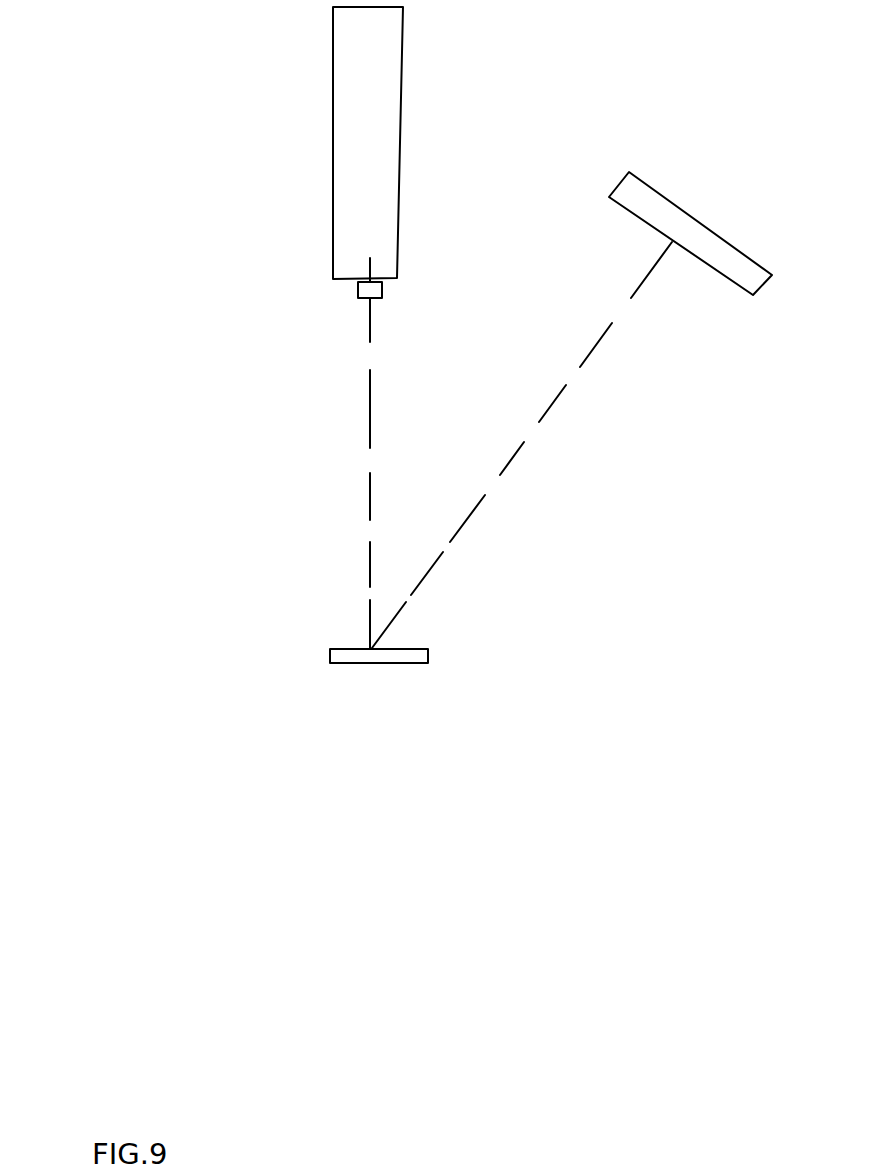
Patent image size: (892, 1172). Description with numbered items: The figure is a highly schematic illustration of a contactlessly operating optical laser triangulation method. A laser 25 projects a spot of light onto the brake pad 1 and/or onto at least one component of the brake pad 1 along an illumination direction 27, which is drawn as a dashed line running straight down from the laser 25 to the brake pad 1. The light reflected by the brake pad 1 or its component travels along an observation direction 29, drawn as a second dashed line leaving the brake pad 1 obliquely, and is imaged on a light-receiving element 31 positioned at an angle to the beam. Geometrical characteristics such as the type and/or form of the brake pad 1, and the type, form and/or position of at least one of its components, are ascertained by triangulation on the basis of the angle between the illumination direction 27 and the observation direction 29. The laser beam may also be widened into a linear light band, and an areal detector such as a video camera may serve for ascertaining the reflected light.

The laser 25 is at (387, 72).
The illumination direction 27 is at (368, 413).
The observation direction 29 is at (552, 408).
The light-receiving element 31 is at (692, 228).
The brake pad 1 is at (407, 655).